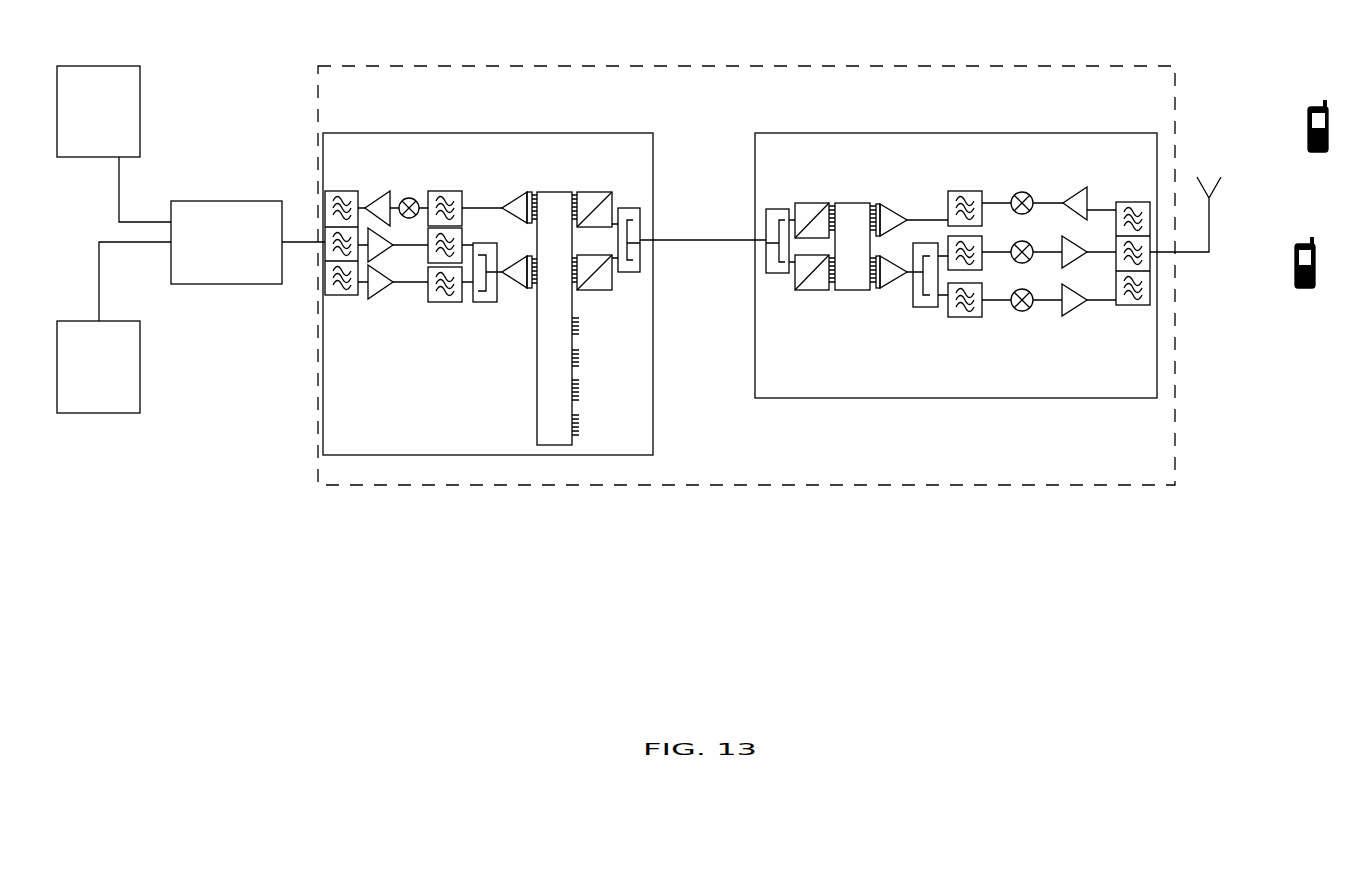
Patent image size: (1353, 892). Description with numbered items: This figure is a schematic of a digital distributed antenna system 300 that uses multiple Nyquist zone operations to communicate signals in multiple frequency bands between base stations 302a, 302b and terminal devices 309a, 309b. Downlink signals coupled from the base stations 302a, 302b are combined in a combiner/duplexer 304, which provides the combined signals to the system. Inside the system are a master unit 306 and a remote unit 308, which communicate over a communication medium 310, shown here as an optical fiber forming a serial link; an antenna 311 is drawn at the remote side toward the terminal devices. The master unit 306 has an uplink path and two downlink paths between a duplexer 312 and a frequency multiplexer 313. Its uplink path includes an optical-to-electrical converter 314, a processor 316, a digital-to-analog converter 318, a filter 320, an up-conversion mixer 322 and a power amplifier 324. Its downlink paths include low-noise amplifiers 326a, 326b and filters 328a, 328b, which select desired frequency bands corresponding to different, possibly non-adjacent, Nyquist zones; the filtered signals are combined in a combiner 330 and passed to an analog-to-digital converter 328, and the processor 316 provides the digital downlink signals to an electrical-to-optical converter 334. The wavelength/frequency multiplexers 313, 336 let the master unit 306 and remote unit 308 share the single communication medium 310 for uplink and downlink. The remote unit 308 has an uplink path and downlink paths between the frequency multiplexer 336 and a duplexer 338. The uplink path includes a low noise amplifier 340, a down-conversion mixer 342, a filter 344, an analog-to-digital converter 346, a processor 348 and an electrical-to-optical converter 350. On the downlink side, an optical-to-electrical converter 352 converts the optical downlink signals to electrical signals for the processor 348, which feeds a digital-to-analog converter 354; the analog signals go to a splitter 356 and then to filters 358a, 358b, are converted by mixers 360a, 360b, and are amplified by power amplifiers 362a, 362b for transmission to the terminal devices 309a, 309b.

The digital distributed antenna system 300 is at (702, 40).
The base station 302a is at (98, 111).
The base station 302b is at (98, 367).
The combiner/duplexer 304 is at (226, 242).
The master unit 306 is at (487, 133).
The remote unit 308 is at (885, 133).
The terminal device 309a is at (1315, 156).
The terminal device 309b is at (1305, 297).
The communication medium 310 is at (734, 229).
The antenna 311 is at (1195, 151).
The duplexer 312 is at (339, 191).
The frequency multiplexer 313 is at (635, 208).
The optical-to-electrical converter 314 is at (590, 192).
The processor 316 is at (537, 395).
The digital-to-analog converter 318 is at (508, 200).
The filter 320 is at (462, 190).
The up-conversion mixer 322 is at (410, 198).
The power amplifier 324 is at (385, 190).
The low-noise amplifier 326a is at (380, 262).
The low-noise amplifier 326b is at (373, 300).
The filter 328a is at (463, 240).
The filter 328b is at (440, 302).
The analog-to-digital converter 328 is at (510, 289).
The combiner 330 is at (492, 302).
The electrical-to-optical converter 334 is at (592, 290).
The frequency multiplexer 336 is at (772, 273).
The duplexer 338 is at (1116, 203).
The low noise amplifier 340 is at (1080, 188).
The down-conversion mixer 342 is at (1018, 193).
The filter 344 is at (960, 191).
The analog-to-digital converter 346 is at (907, 190).
The processor 348 is at (862, 203).
The electrical-to-optical converter 350 is at (812, 203).
The optical-to-electrical converter 352 is at (808, 290).
The digital-to-analog converter 354 is at (887, 289).
The splitter 356 is at (918, 307).
The filter 358a is at (980, 268).
The filter 358b is at (961, 318).
The up-conversion mixer 360a is at (1017, 242).
The up-conversion mixer 360b is at (1011, 312).
The power amplifier 362a is at (1083, 266).
The power amplifier 362b is at (1073, 316).